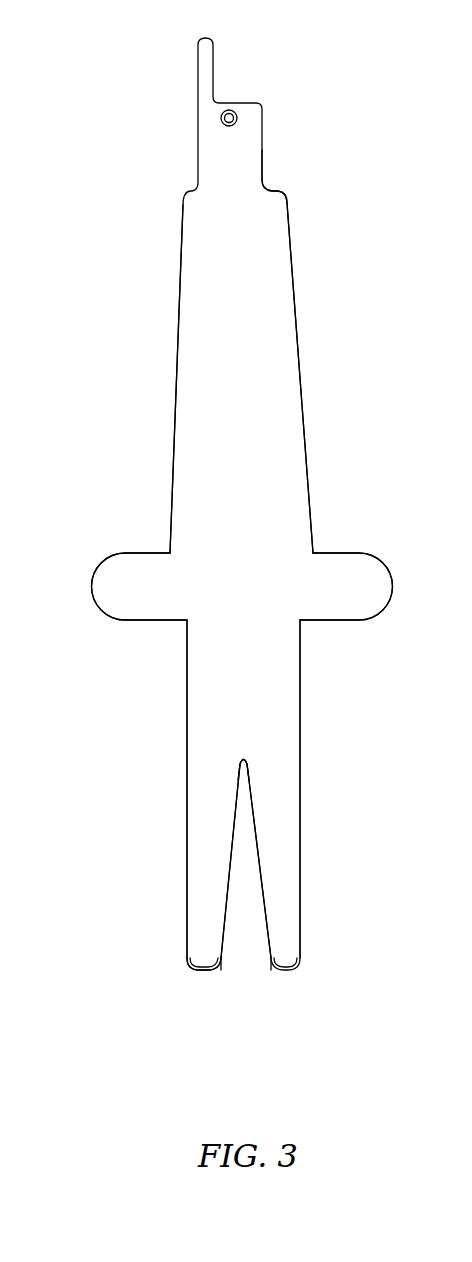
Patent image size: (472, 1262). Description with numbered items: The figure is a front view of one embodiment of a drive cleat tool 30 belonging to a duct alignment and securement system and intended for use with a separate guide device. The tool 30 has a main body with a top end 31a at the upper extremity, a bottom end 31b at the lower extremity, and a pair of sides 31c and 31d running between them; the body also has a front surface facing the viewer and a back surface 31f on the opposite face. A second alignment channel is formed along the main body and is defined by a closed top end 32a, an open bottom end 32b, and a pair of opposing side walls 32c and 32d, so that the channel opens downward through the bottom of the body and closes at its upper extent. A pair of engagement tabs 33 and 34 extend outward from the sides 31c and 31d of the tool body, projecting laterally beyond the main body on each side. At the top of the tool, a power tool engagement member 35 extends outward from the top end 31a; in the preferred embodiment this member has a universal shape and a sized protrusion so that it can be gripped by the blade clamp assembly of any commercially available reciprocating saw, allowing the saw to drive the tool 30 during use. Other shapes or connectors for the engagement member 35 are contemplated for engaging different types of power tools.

The drive cleat tool 30 is at (116, 95).
The top end 31a is at (233, 200).
The bottom end 31b is at (168, 965).
The side 31c is at (258, 420).
The side 31d is at (301, 673).
The back surface 31f is at (301, 381).
The closed top end 32a is at (247, 757).
The open bottom end 32b is at (245, 977).
The side wall 32c is at (229, 875).
The side wall 32d is at (263, 868).
The engagement tab 33 is at (148, 600).
The engagement tab 34 is at (361, 600).
The power tool engagement member 35 is at (235, 153).